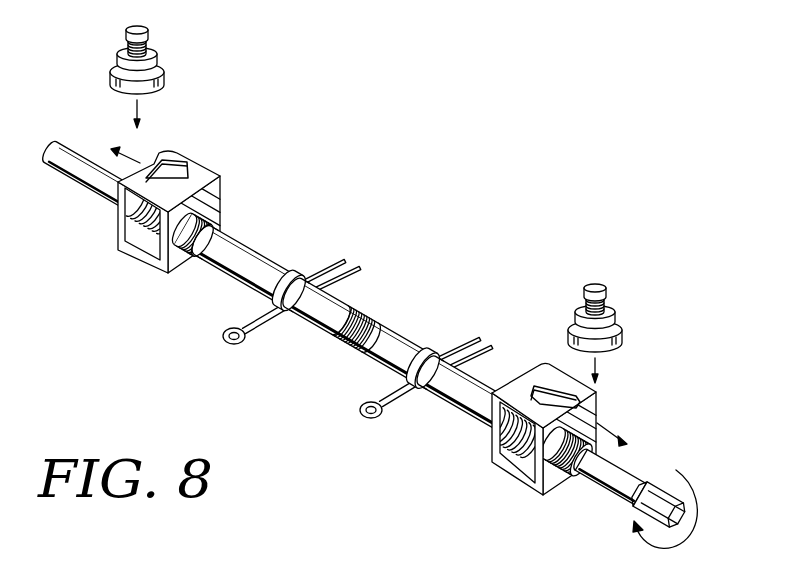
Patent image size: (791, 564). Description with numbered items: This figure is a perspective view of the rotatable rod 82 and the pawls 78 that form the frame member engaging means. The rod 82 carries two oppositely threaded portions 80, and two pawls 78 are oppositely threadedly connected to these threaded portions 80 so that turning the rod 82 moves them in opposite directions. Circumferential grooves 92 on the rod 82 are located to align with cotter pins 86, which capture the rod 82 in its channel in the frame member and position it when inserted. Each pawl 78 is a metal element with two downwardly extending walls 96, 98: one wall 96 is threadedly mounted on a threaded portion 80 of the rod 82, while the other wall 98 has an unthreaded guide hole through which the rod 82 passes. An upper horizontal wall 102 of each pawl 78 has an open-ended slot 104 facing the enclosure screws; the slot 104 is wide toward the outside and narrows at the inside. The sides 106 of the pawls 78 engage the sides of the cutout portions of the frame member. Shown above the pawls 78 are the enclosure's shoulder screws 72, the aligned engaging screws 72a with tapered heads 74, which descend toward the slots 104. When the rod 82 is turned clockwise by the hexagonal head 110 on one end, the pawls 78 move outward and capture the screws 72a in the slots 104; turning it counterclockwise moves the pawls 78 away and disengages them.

The shoulder screw 72 is at (174, 28).
The aligned engaging screw 72a is at (154, 63).
The tapered head 74 is at (155, 85).
The pawl 78 is at (180, 258).
The threaded portion 80 is at (147, 230).
The rotatable rod 82 is at (397, 330).
The cotter pin 86 is at (243, 341).
The circumferential groove 92 is at (293, 277).
The threaded downwardly extending wall 96 is at (212, 209).
The guide wall 98 is at (130, 227).
The upper horizontal wall 102 is at (208, 172).
The open-ended slot 104 is at (178, 170).
The pawl side 106 is at (118, 212).
The hexagonal head 110 is at (632, 517).